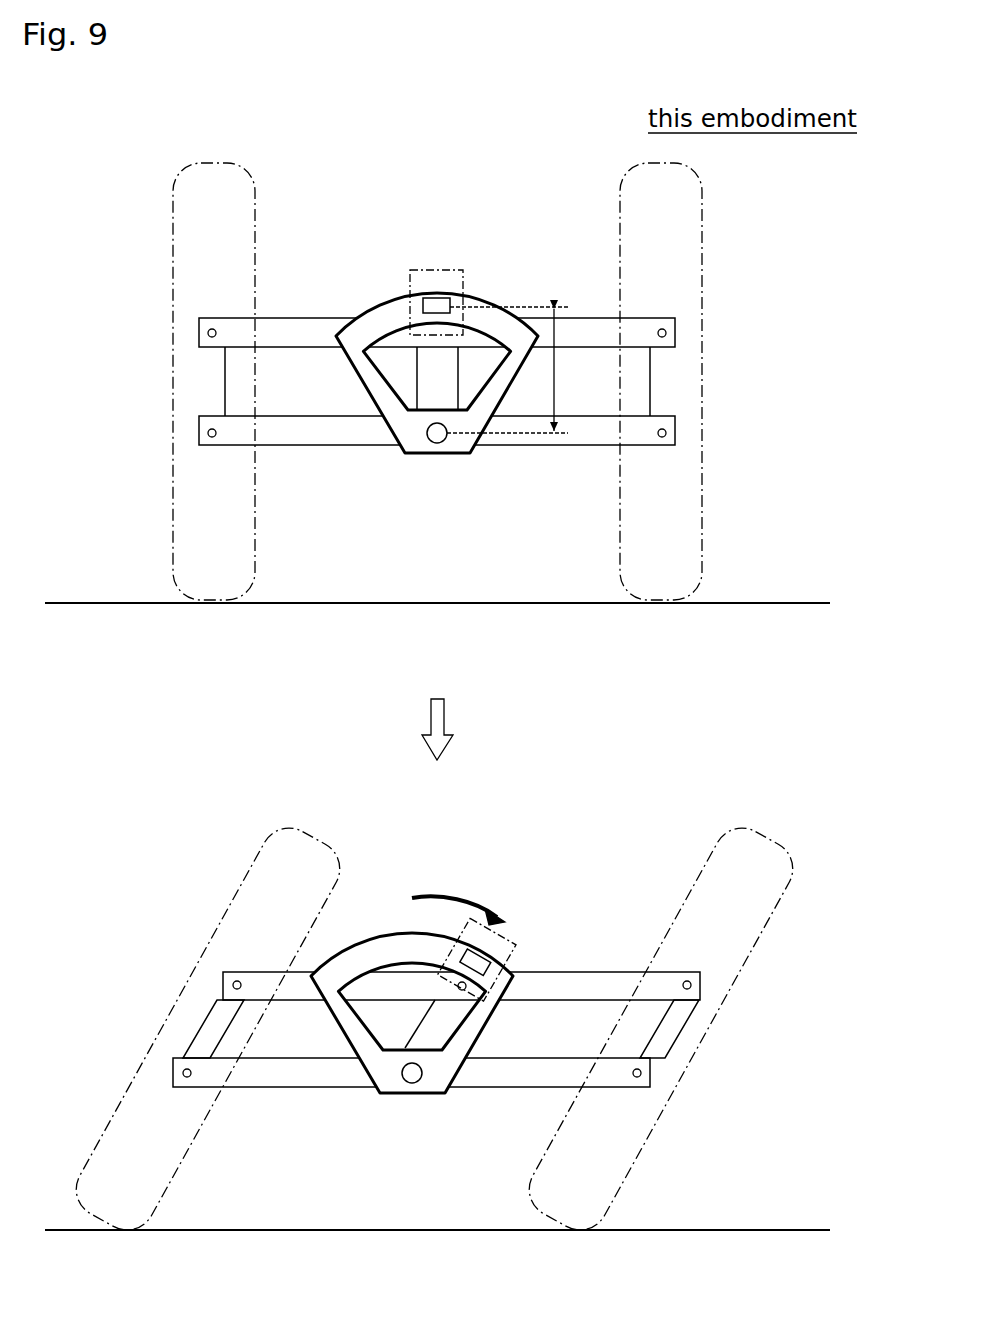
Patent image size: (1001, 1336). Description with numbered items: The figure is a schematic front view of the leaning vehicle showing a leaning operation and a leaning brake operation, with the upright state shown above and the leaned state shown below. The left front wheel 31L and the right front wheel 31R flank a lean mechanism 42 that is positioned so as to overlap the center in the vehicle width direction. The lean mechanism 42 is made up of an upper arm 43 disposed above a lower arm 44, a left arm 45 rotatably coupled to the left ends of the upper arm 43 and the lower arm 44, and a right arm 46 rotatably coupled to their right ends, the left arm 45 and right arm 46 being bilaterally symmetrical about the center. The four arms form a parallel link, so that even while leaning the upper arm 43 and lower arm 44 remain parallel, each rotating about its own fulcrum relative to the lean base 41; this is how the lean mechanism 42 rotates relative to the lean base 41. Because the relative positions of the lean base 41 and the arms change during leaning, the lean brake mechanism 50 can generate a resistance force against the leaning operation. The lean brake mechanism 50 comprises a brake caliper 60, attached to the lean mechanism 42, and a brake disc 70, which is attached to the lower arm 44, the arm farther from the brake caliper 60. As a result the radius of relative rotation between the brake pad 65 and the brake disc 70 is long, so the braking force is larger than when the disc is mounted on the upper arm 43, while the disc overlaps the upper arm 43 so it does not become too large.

The left front wheel 31L is at (173, 222).
The right front wheel 31R is at (702, 222).
The lean base 41 is at (406, 398).
The lean mechanism 42 is at (432, 626).
The upper arm 43 is at (282, 328).
The lower arm 44 is at (508, 445).
The left arm 45 is at (212, 381).
The right arm 46 is at (663, 385).
The lean brake mechanism 50 is at (451, 624).
The brake caliper 60 is at (458, 267).
The brake pad 65 is at (432, 295).
The brake disc 70 is at (367, 320).